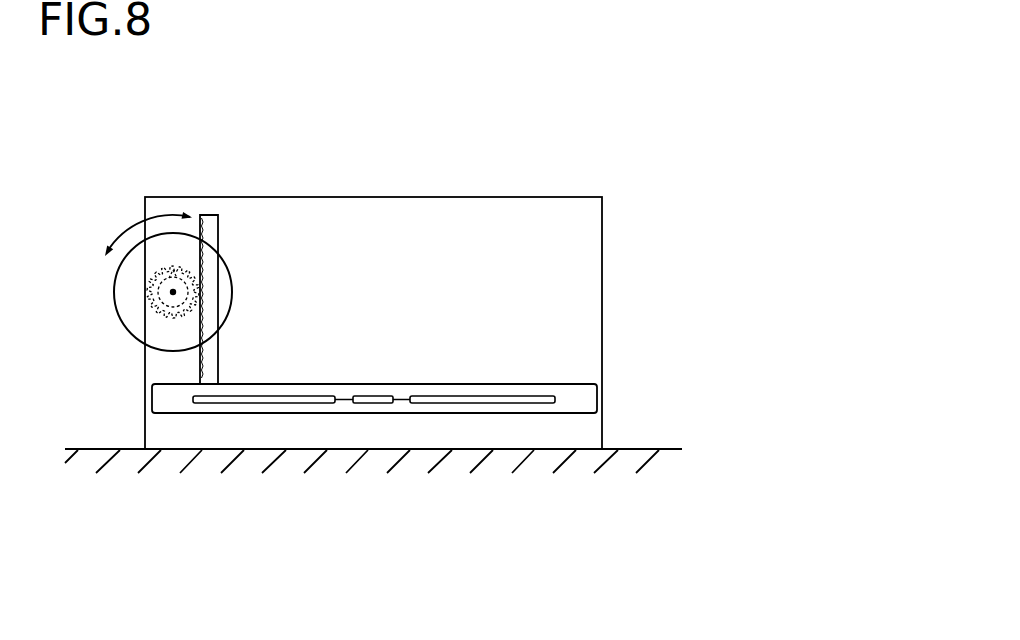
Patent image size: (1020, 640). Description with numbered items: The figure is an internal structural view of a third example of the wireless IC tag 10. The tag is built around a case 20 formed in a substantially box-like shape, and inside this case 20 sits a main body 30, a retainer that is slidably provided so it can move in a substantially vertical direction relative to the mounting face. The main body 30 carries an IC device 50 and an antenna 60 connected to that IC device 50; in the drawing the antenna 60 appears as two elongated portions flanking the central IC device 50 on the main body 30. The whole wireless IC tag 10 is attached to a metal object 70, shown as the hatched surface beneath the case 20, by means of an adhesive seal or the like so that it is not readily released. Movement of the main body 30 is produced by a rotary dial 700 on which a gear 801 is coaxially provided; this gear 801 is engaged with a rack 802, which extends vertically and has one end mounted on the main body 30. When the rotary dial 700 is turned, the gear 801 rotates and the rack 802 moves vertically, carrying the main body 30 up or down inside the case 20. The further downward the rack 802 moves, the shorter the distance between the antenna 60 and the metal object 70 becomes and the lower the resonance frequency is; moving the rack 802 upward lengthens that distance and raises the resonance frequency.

The wireless IC tag 10 is at (483, 106).
The case 20 is at (602, 277).
The main body 30 is at (597, 395).
The IC device 50 is at (373, 396).
The antenna 60 is at (267, 396).
The metal object 70 is at (387, 590).
The rotary dial 700 is at (118, 313).
The gear 801 is at (157, 280).
The rack 802 is at (217, 197).